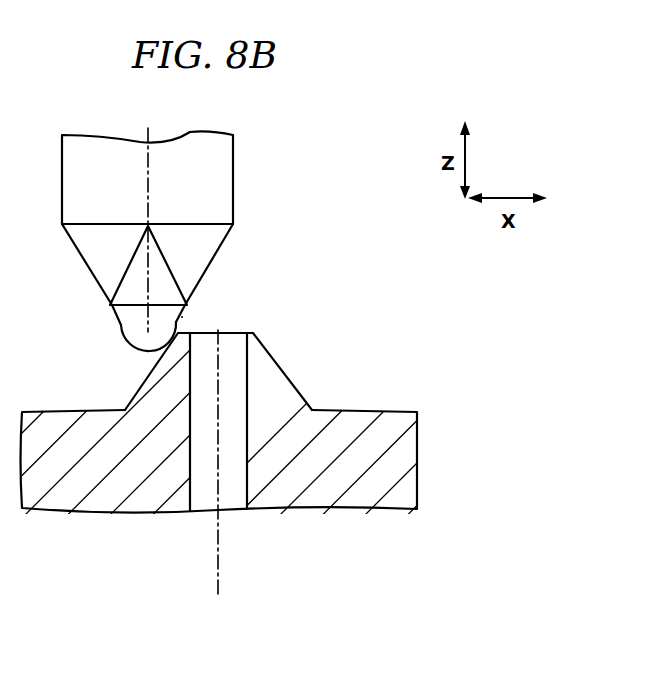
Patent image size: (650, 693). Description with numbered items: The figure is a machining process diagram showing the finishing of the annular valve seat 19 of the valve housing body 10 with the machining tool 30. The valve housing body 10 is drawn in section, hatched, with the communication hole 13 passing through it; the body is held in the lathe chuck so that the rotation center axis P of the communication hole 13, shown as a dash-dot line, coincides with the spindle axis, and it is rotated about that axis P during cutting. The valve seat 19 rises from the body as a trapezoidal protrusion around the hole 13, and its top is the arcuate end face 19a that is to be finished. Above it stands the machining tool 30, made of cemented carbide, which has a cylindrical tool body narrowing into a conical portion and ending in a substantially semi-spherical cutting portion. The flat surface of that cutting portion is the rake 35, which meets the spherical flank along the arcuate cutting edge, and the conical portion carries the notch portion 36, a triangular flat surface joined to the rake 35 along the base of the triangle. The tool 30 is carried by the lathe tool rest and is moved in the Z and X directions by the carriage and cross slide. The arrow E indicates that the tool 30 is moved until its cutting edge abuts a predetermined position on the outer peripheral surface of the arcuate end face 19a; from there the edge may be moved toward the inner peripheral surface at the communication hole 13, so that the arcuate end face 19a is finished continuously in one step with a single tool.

The machining tool 30 is at (221, 163).
The notch portion 36 is at (127, 268).
The rake 35 is at (137, 335).
The arrow E is at (192, 319).
The valve housing body 10 is at (360, 510).
The annular valve seat 19 is at (275, 376).
The arcuate end face 19a is at (258, 331).
The communication hole 13 is at (230, 515).
The rotation center axis P is at (218, 587).